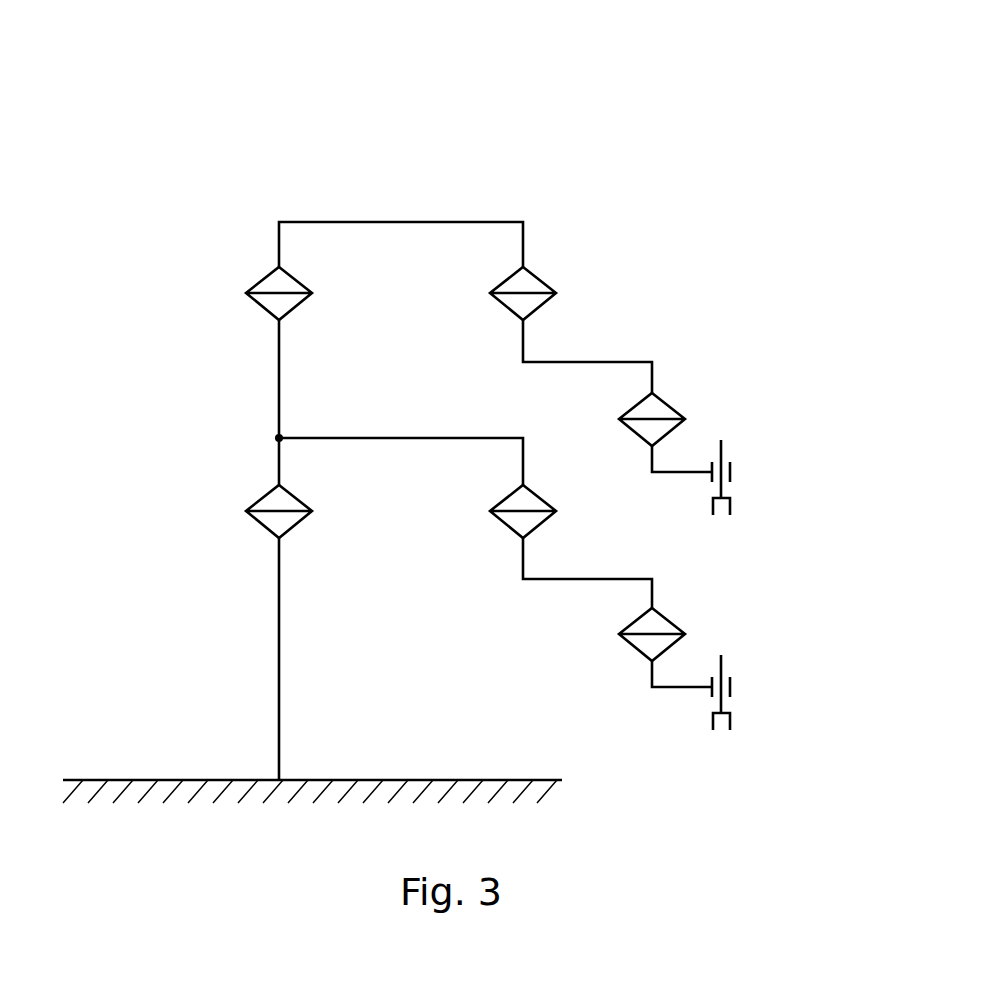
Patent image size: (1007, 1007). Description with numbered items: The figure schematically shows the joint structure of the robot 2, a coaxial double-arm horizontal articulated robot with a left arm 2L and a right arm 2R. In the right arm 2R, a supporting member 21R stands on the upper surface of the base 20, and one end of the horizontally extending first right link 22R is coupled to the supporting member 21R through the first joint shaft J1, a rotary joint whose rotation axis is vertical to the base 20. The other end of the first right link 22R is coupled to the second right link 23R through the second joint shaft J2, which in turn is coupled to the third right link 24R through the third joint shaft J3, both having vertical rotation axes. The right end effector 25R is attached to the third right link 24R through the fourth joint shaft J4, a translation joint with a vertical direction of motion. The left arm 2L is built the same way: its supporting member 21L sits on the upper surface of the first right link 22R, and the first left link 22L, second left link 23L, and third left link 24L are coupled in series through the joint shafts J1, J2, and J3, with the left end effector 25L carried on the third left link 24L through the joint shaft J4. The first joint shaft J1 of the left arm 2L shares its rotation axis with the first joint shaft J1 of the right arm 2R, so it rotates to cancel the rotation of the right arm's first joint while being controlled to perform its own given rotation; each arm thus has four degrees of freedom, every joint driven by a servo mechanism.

The robot 2 is at (757, 108).
The left arm 2L is at (447, 180).
The right arm 2R is at (437, 413).
The base 20 is at (465, 780).
The supporting member 21L is at (281, 361).
The supporting member 21R is at (281, 612).
The first left link 22L is at (383, 222).
The first right link 22R is at (386, 438).
The second left link 23L is at (606, 362).
The second right link 23R is at (606, 579).
The third left link 24L is at (678, 474).
The third right link 24R is at (678, 689).
The left end effector 25L is at (733, 506).
The right end effector 25R is at (733, 721).
The first joint shaft J1 is at (299, 280).
The second joint shaft J2 is at (540, 279).
The third joint shaft J3 is at (669, 404).
The fourth joint shaft J4 is at (733, 471).